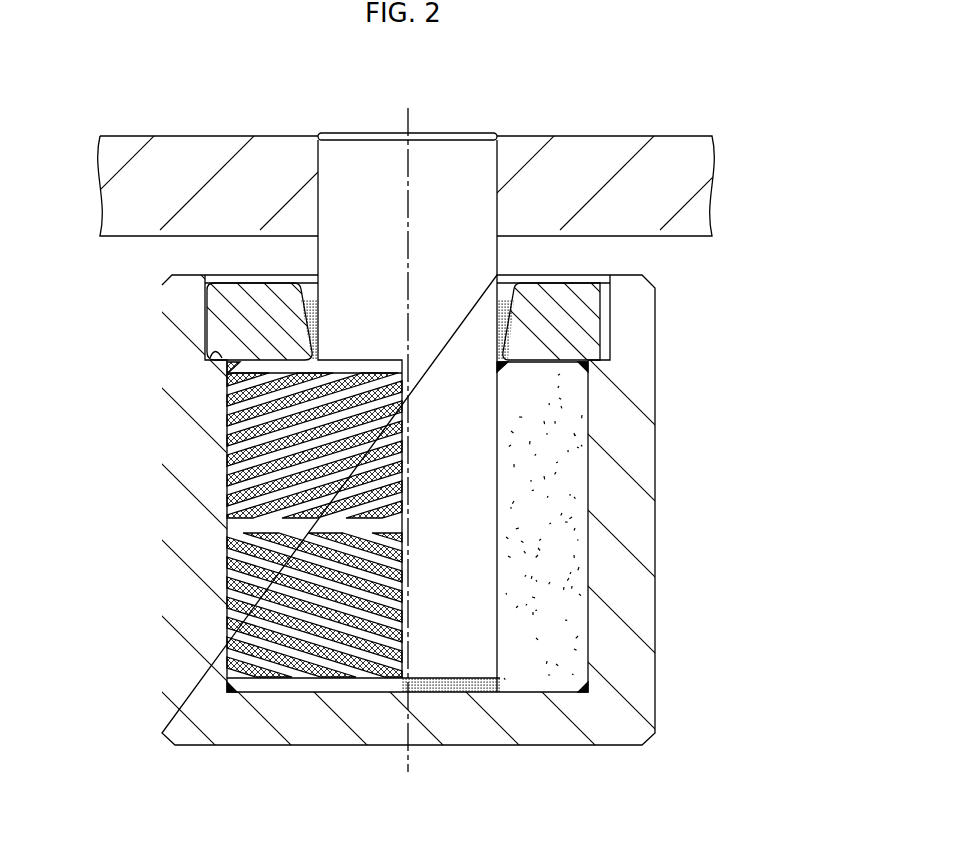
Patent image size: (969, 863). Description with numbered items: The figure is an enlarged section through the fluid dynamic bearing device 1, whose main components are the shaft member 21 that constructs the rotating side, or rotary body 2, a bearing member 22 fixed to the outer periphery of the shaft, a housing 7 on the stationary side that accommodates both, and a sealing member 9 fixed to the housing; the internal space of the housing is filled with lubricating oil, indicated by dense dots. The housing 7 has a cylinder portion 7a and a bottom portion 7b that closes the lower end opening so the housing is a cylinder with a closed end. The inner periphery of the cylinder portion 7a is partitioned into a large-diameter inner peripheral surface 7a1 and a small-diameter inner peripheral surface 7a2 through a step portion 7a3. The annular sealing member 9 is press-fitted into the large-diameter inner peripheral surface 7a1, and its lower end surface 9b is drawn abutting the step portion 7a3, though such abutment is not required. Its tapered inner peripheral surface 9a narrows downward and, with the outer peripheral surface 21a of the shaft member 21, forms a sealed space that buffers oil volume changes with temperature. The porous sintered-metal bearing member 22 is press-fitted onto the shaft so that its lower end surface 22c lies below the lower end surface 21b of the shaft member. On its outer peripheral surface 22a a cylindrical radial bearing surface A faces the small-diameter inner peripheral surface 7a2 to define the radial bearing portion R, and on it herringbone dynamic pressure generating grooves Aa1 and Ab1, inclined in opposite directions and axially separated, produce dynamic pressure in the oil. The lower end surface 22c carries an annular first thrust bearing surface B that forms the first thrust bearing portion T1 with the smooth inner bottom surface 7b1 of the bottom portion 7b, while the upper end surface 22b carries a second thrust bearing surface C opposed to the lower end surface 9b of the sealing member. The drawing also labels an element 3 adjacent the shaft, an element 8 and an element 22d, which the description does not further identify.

The fluid dynamic bearing device 1 is at (736, 314).
The rotary body 2 is at (514, 125).
The fastened plate member 3 is at (600, 162).
The housing 7 is at (642, 428).
The cylinder portion 7a is at (178, 443).
The large-diameter inner peripheral surface 7a1 is at (218, 310).
The small-diameter inner peripheral surface 7a2 is at (227, 553).
The step portion 7a3 is at (280, 362).
The bottom portion 7b is at (498, 733).
The inner bottom surface 7b1 is at (340, 692).
The gap 8 is at (508, 408).
The sealing member 9 is at (590, 298).
The inner peripheral surface 9a is at (497, 322).
The lower end surface 9b is at (222, 350).
The shaft member 21 is at (453, 167).
The outer peripheral surface 21a is at (498, 632).
The lower end surface 21b is at (433, 694).
The bearing member 22 is at (565, 466).
The outer peripheral surface 22a is at (590, 602).
The upper end surface 22b is at (565, 340).
The lower end surface 22c is at (282, 695).
The filling member inner surface 22d is at (500, 497).
The radial bearing surface A is at (227, 417).
The dynamic pressure generating grooves Aa1 is at (227, 507).
The dynamic pressure generating grooves Ab1 is at (227, 627).
The first thrust bearing surface B is at (323, 704).
The second thrust bearing surface C is at (552, 350).
The radial bearing portion R is at (212, 478).
The first thrust bearing portion T1 is at (550, 703).